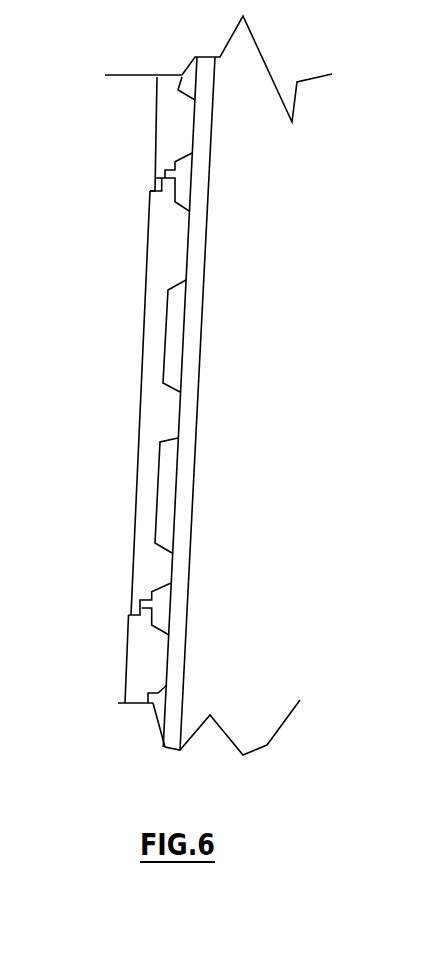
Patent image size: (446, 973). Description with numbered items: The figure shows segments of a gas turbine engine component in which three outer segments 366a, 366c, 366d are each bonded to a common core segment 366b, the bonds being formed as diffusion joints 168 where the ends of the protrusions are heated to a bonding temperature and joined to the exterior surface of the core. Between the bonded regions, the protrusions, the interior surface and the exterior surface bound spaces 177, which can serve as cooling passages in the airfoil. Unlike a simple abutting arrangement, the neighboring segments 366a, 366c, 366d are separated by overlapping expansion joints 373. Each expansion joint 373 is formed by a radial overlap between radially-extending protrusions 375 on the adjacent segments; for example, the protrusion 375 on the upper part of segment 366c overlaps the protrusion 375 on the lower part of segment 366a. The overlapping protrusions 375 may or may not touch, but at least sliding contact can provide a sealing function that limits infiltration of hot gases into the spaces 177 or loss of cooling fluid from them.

The diffusion joints 168 is at (195, 135).
The spaces 177 is at (167, 495).
The segment 366a is at (155, 130).
The segment 366b is at (200, 345).
The segment 366c is at (144, 327).
The segment 366d is at (128, 642).
The overlapping expansion joints 373 is at (134, 212).
The protrusions 375 is at (155, 181).